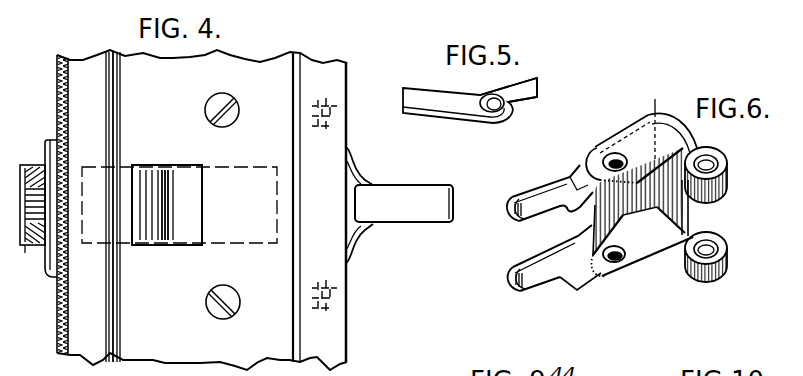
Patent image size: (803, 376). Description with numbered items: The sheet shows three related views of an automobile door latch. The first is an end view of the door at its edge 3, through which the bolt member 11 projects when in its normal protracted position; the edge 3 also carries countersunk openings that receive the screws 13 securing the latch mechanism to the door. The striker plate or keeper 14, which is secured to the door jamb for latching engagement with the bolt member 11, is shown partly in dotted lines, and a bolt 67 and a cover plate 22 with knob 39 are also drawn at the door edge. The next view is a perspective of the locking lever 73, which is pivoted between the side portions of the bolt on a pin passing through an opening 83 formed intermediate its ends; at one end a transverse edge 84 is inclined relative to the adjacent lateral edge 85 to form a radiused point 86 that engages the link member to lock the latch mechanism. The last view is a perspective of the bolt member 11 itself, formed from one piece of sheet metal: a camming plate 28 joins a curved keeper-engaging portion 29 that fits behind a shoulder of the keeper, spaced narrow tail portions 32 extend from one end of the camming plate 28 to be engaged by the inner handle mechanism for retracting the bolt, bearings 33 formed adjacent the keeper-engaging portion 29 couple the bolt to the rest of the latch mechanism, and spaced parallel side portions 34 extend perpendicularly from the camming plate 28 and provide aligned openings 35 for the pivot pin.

In FIG. 4, the edge 3 is at (250, 70).
In FIG. 4, the cover plate 22 is at (40, 190).
In FIG. 4, the knob 39 is at (26, 225).
In FIG. 4, the striker plate or keeper 14 is at (240, 180).
In FIG. 4, the bolt member 11 is at (182, 227).
In FIG. 6, the bolt member 11 is at (664, 96).
In FIG. 4, the screws 13 is at (215, 307).
In FIG. 4, the bolt 67 is at (430, 213).
In FIG. 5, the locking lever 73 is at (443, 117).
In FIG. 5, the lateral edge 85 is at (510, 82).
In FIG. 5, the point 86 is at (537, 78).
In FIG. 5, the transverse edge 84 is at (540, 88).
In FIG. 5, the opening 83 is at (507, 107).
In FIG. 6, the side portions 34 is at (633, 142).
In FIG. 6, the openings 35 is at (614, 262).
In FIG. 6, the tail portions 32 is at (507, 210).
In FIG. 6, the camming plate 28 is at (633, 216).
In FIG. 6, the keeper-engaging portion 29 is at (678, 193).
In FIG. 6, the bearings 33 is at (735, 148).